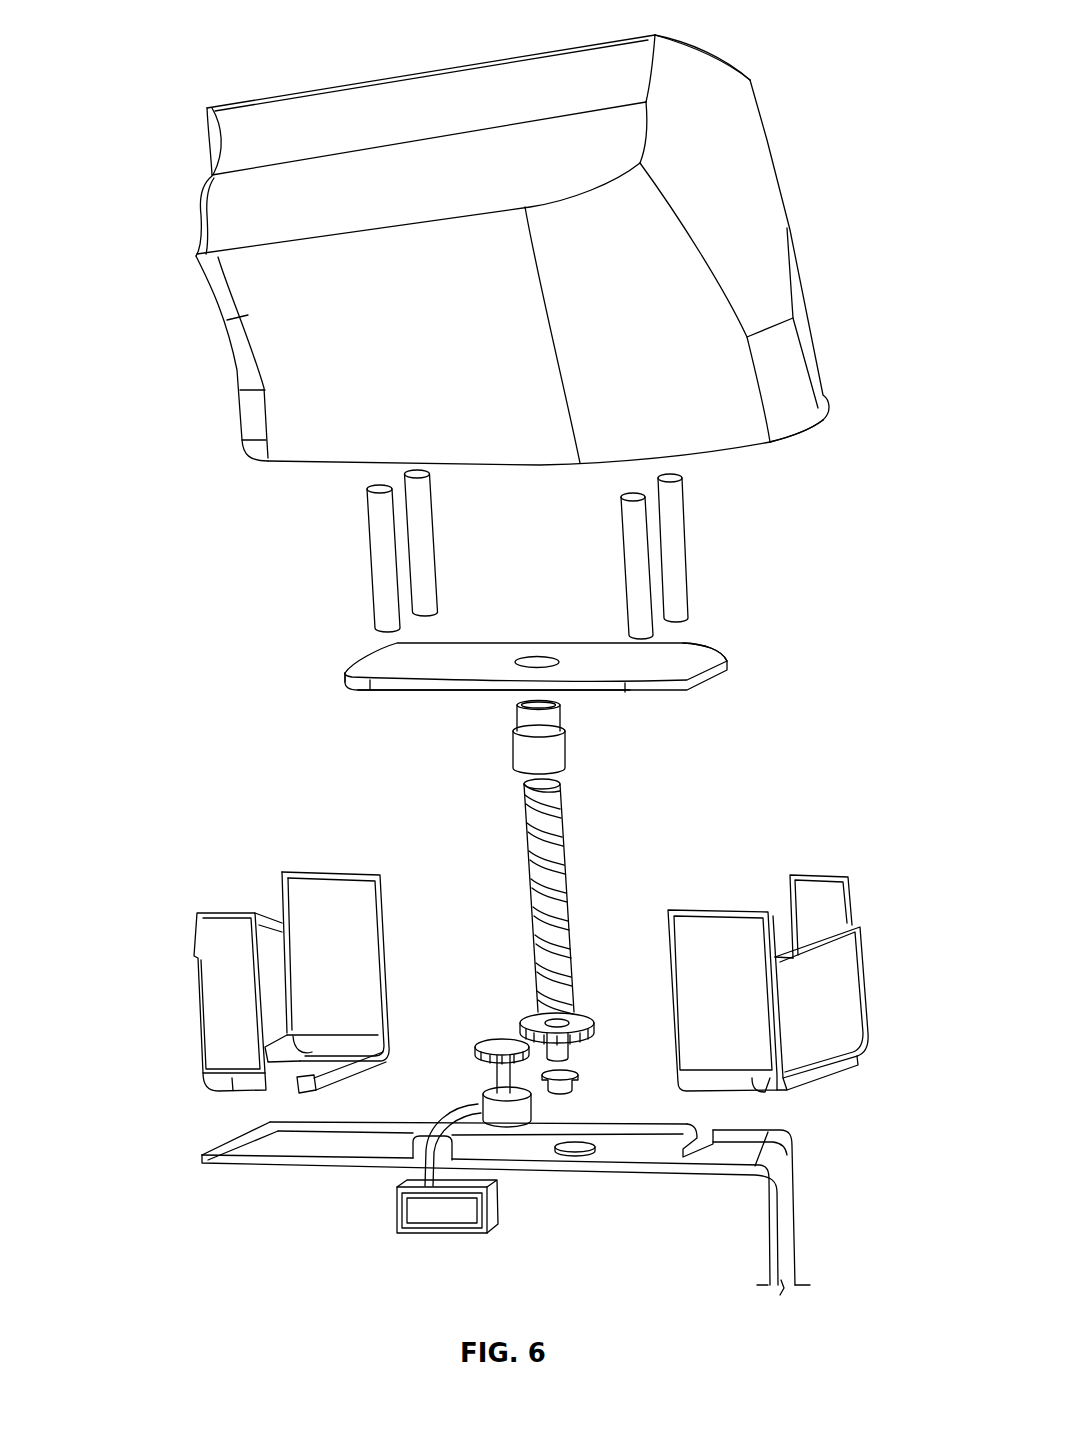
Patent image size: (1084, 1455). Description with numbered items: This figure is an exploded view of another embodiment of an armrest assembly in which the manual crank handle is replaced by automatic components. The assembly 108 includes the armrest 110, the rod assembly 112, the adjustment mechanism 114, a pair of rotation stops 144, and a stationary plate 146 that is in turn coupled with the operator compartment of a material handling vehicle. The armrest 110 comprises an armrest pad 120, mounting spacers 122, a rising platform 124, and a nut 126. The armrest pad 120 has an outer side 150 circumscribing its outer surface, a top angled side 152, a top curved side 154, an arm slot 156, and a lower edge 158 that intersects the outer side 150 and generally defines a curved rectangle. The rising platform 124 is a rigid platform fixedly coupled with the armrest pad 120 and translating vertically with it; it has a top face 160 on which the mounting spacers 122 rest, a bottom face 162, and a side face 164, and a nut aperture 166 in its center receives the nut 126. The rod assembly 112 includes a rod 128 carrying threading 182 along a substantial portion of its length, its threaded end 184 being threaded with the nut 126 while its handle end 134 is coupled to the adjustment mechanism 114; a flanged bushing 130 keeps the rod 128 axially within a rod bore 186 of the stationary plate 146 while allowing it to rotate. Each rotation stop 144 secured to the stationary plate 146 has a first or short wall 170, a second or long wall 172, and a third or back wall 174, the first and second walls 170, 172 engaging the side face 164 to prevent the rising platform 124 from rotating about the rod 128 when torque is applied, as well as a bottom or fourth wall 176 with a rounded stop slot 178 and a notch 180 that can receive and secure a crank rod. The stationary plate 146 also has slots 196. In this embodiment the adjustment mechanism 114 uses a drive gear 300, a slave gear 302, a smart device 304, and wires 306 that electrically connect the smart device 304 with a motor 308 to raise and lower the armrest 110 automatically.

The armrest 110 is at (133, 44).
The assembly 108 is at (178, 533).
The rod assembly 112 is at (488, 822).
The adjustment mechanism 114 is at (325, 1195).
The armrest pad 120 is at (756, 122).
The mounting spacers 122 is at (375, 517).
The rising platform 124 is at (727, 660).
The nut 126 is at (555, 718).
The rod 128 is at (560, 940).
The bushing 130 is at (572, 1083).
The handle end 134 is at (560, 1047).
The rotation stops 144 is at (200, 1043).
The stationary plate 146 is at (748, 1146).
The outer side 150 is at (795, 355).
The top angled side 152 is at (703, 48).
The top curved side 154 is at (257, 185).
The arm slot 156 is at (392, 95).
The lower edge 158 is at (790, 435).
The top face 160 is at (708, 655).
The bottom face 162 is at (415, 690).
The side face 164 is at (345, 675).
The nut aperture 166 is at (535, 658).
The first wall 170 is at (220, 977).
The second wall 172 is at (285, 888).
The third wall 174 is at (262, 943).
The fourth wall 176 is at (337, 1050).
The stop slot 178 is at (272, 1100).
The notch 180 is at (390, 1057).
The threading 182 is at (540, 870).
The threaded end 184 is at (545, 803).
The rod bore 186 is at (588, 1152).
The slots 196 is at (705, 1152).
The drive gear 300 is at (490, 1040).
The slave gear 302 is at (540, 1012).
The smart device 304 is at (432, 1213).
The wires 306 is at (400, 1141).
The motor 308 is at (460, 1106).